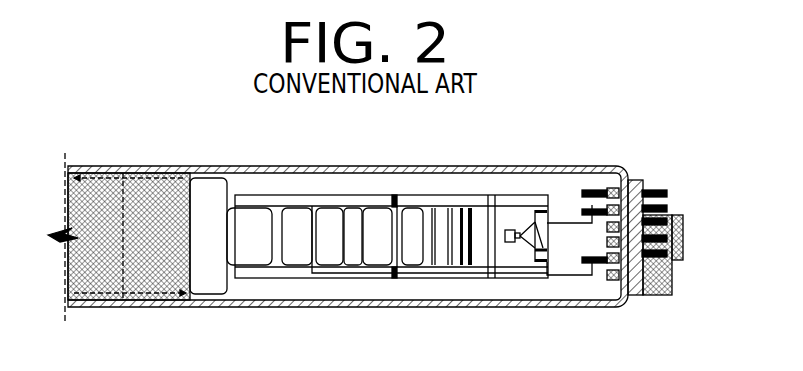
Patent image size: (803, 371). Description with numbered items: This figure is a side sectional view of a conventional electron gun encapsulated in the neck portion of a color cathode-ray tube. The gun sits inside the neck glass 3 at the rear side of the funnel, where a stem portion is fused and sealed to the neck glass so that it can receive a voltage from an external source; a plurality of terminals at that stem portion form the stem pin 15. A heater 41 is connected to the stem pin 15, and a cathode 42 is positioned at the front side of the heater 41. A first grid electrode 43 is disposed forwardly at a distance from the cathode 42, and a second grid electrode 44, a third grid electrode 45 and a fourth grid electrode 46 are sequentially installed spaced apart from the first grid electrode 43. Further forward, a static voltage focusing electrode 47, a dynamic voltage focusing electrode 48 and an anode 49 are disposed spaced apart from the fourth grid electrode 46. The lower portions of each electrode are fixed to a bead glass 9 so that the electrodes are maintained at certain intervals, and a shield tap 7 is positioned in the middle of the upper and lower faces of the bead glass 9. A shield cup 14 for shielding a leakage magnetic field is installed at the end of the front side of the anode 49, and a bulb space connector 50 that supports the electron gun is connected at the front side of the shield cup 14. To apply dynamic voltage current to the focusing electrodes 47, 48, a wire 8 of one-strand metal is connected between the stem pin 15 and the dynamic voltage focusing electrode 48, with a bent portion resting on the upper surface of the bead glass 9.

The neck glass 3 is at (146, 308).
The shield tap 7 is at (397, 200).
The wire 8 is at (338, 273).
The bead glass 9 is at (276, 278).
The shield cup 14 is at (202, 185).
The stem pin 15 is at (660, 193).
The heater 41 is at (557, 225).
The cathode 42 is at (528, 250).
The first grid electrode 43 is at (490, 262).
The second grid electrode 44 is at (490, 208).
The third grid electrode 45 is at (462, 265).
The fourth grid electrode 46 is at (440, 218).
The static voltage focusing electrode 47 is at (372, 217).
The dynamic voltage focusing electrode 48 is at (327, 217).
The anode 49 is at (244, 217).
The bulb space connector 50 is at (103, 177).